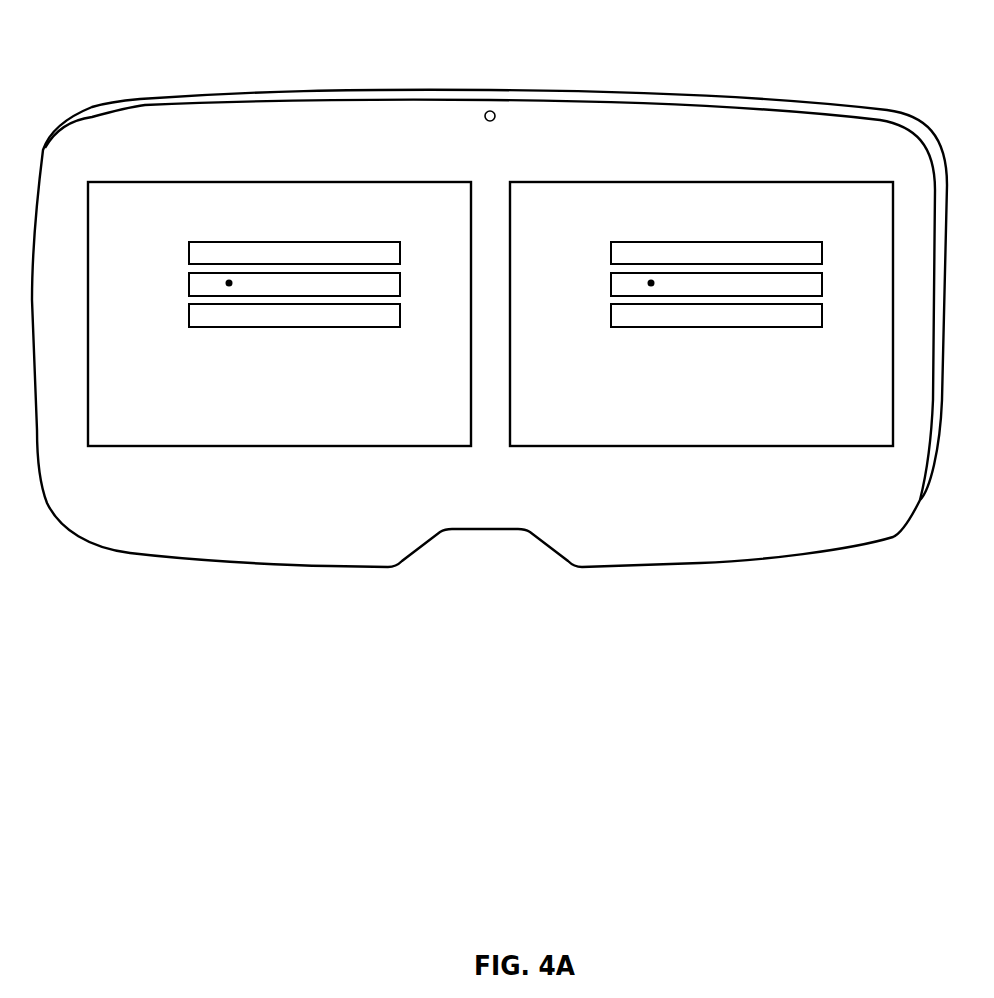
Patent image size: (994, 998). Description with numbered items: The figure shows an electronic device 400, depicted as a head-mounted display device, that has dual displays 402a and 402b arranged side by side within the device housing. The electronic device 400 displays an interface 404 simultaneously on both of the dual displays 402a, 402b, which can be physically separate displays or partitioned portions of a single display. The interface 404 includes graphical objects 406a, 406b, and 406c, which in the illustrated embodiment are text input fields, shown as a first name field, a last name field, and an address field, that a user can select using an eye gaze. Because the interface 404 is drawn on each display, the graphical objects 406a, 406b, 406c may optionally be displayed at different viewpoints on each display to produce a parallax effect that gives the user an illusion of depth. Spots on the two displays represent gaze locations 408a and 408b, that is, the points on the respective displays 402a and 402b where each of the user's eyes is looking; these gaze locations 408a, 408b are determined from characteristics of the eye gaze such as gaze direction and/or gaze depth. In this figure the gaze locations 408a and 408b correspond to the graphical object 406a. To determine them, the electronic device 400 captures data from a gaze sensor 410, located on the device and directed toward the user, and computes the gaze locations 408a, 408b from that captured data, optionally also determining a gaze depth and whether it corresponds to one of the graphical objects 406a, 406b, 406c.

The electronic device 400 is at (138, 70).
The display 402a is at (190, 182).
The display 402b is at (612, 182).
The interface 404 is at (146, 190).
The graphical object 406a is at (245, 242).
The graphical object 406b is at (325, 273).
The graphical object 406c is at (308, 327).
The gaze location 408a is at (229, 286).
The gaze location 408b is at (651, 286).
The gaze sensor 410 is at (490, 111).